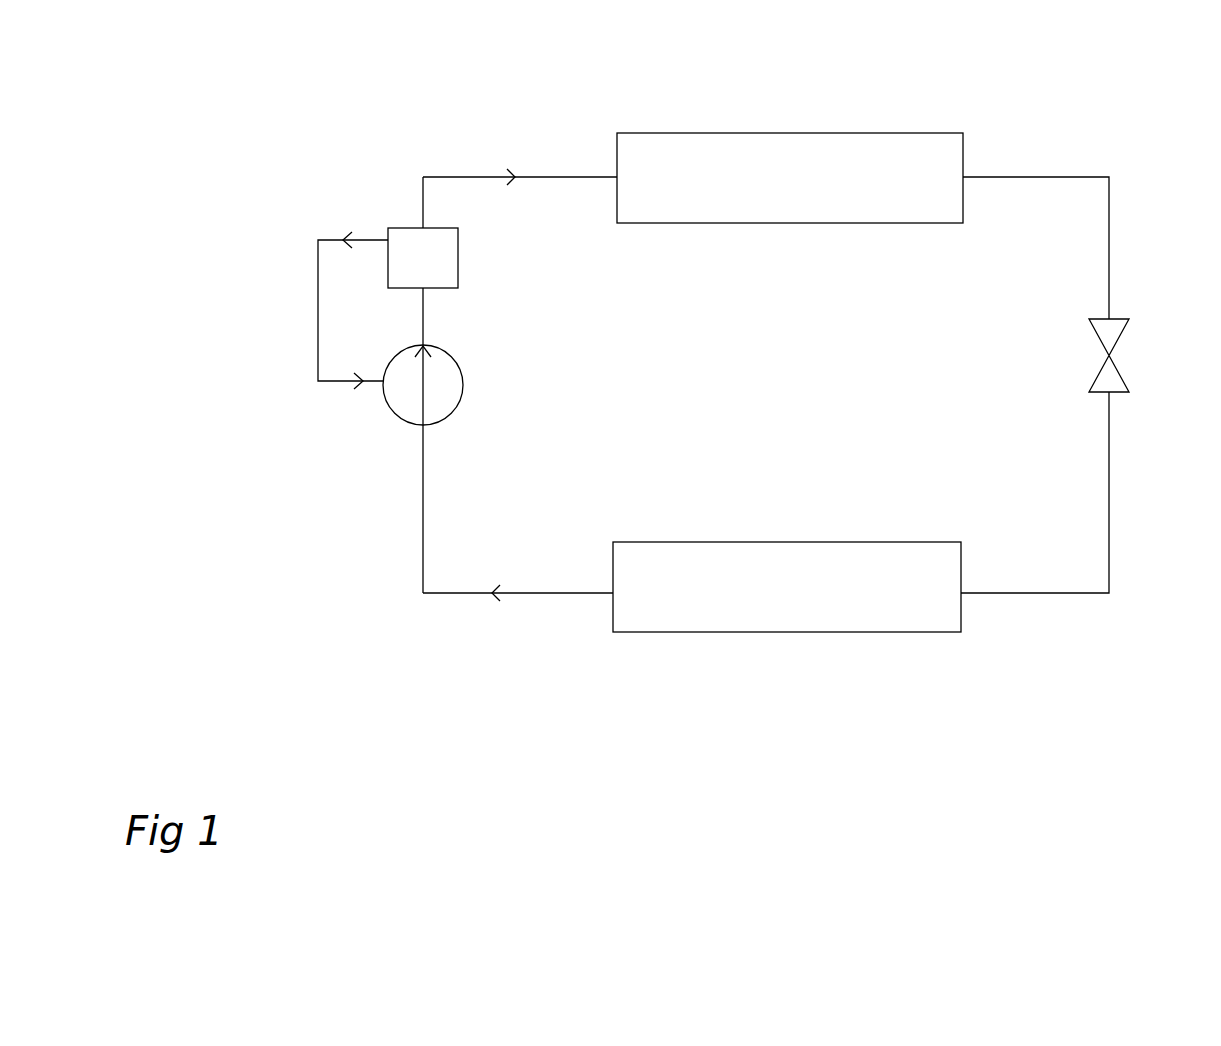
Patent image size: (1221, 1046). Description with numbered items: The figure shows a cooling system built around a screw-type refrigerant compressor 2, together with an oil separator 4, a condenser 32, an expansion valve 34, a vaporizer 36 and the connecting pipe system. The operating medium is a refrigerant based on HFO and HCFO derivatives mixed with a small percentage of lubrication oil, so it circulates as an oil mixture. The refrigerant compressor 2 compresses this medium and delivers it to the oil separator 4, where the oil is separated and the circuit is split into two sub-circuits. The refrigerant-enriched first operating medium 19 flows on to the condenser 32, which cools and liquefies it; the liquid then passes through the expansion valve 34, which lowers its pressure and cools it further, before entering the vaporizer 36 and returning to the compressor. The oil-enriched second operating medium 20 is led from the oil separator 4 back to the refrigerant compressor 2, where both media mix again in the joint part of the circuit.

The refrigerant compressor 2 is at (385, 408).
The oil separator 4 is at (403, 221).
The first operating medium 19 is at (541, 171).
The second operating medium 20 is at (316, 301).
The condenser 32 is at (652, 125).
The expansion valve 34 is at (1113, 330).
The vaporizer 36 is at (842, 612).